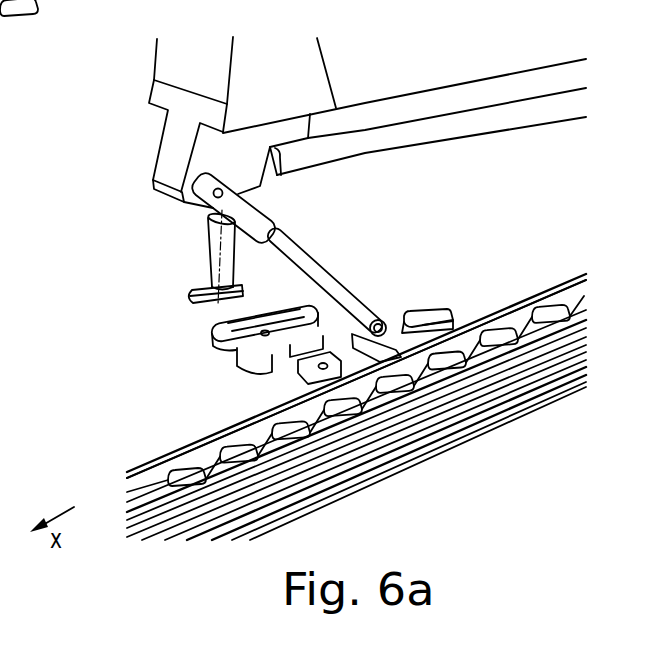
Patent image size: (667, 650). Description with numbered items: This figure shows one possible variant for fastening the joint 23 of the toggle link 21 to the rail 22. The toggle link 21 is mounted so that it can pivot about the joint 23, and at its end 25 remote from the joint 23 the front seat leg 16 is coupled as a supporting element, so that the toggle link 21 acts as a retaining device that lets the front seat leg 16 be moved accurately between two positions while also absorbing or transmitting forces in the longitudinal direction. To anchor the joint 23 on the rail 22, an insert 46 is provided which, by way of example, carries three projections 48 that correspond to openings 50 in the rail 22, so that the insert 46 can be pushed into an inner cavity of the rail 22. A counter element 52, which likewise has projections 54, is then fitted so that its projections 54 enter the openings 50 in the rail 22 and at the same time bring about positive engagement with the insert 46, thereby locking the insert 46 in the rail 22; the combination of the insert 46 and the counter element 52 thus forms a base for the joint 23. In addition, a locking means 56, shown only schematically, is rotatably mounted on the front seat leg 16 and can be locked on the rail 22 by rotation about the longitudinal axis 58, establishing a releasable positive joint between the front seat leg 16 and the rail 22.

The front seat leg 16 is at (185, 63).
The toggle link 21 is at (325, 278).
The rail 22 is at (588, 277).
The joint 23 is at (362, 345).
The end 25 is at (152, 188).
The insert 46 is at (442, 310).
The projections 48 is at (466, 316).
The openings 50 is at (173, 470).
The counter element 52 is at (214, 340).
The projections 54 is at (222, 388).
The locking means 56 is at (207, 260).
The longitudinal axis 58 is at (193, 299).